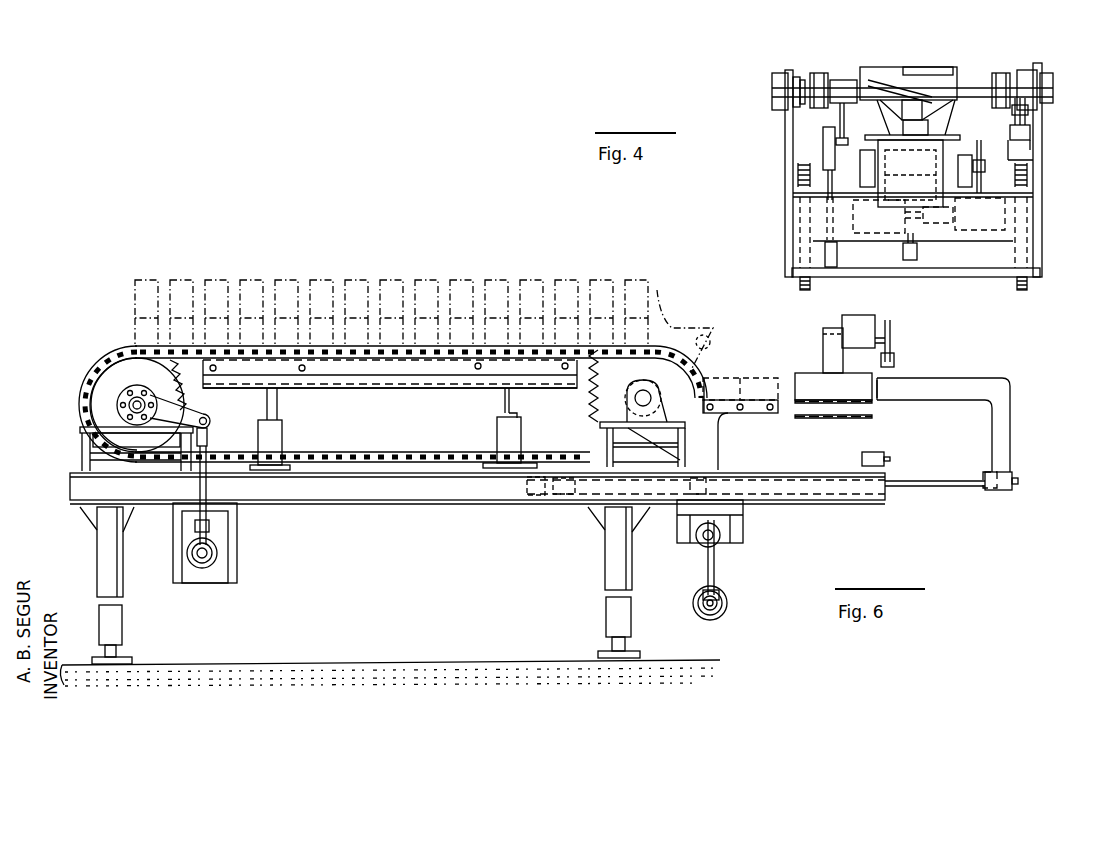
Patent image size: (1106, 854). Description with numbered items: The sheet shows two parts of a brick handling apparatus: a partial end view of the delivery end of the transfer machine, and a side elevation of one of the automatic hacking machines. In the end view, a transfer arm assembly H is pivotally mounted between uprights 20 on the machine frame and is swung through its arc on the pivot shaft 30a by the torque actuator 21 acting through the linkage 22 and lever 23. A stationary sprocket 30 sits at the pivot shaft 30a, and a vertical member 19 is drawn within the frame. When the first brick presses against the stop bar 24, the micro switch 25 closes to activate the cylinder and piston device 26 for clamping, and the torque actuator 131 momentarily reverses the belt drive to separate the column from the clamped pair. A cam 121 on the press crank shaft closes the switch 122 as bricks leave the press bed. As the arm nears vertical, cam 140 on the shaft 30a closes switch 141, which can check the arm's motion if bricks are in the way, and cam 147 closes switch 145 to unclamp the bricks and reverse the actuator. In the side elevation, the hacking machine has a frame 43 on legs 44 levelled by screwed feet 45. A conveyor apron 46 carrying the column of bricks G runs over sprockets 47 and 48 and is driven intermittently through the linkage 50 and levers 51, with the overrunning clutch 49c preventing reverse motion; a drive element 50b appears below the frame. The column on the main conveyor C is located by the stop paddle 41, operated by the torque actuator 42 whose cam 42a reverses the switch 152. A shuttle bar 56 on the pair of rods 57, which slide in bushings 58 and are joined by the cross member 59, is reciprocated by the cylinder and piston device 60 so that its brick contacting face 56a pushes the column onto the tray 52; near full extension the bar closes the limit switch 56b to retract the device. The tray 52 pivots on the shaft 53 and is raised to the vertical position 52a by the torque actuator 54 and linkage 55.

In FIG. 6, the column of bricks G is at (423, 284).
In FIG. 6, the conveyor apron 46 is at (333, 452).
In FIG. 6, the sprocket 47 is at (126, 372).
In FIG. 6, the levers 51 is at (180, 413).
In FIG. 6, the overrunning clutch 49c is at (108, 367).
In FIG. 6, the linkage 50 is at (209, 453).
In FIG. 6, the frame 43 is at (316, 498).
In FIG. 6, the legs 44 is at (118, 566).
In FIG. 6, the screwed feet 45 is at (123, 659).
In FIG. 6, the motor drive 50b is at (214, 572).
In FIG. 6, the cylinder and piston device 60 is at (779, 497).
In FIG. 6, the cross member 59 is at (534, 504).
In FIG. 6, the bushings 58 is at (565, 506).
In FIG. 6, the rods 57 is at (948, 480).
In FIG. 6, the limit switch 56b is at (882, 453).
In FIG. 6, the shuttle bar 56 is at (1022, 423).
In FIG. 6, the brick contacting face 56a is at (888, 392).
In FIG. 6, the stop paddle 41 is at (815, 382).
In FIG. 6, the main conveyor C is at (833, 402).
In FIG. 6, the torque actuator 42 is at (878, 332).
In FIG. 6, the cam 42a is at (892, 341).
In FIG. 6, the single pole double throw switch 152 is at (896, 362).
In FIG. 6, the tray 52 is at (752, 403).
In FIG. 6, the vertical position of tray 52a is at (666, 302).
In FIG. 6, the sprocket 48 is at (590, 408).
In FIG. 6, the shaft 53 is at (640, 396).
In FIG. 6, the torque actuator 54 is at (732, 544).
In FIG. 6, the linkage 55 is at (716, 564).
In FIG. 4, the uprights 20 is at (784, 152).
In FIG. 4, the stationary sprocket 30 is at (808, 72).
In FIG. 4, the transfer arm assembly H is at (820, 74).
In FIG. 4, the cylinder and piston device 26 is at (908, 70).
In FIG. 4, the pivot shaft 30a is at (980, 87).
In FIG. 4, the stop bar 24 is at (888, 128).
In FIG. 4, the micro switch 25 is at (913, 128).
In FIG. 4, the lever 23 is at (843, 124).
In FIG. 4, the linkage 22 is at (832, 185).
In FIG. 4, the rod 19 is at (980, 148).
In FIG. 4, the torque actuator 131 is at (888, 216).
In FIG. 4, the torque actuator 21 is at (984, 238).
In FIG. 4, the cam 121 is at (930, 240).
In FIG. 4, the switch 122 is at (912, 262).
In FIG. 4, the cam 147 is at (1053, 97).
In FIG. 4, the cam 140 is at (1031, 112).
In FIG. 4, the switch 145 is at (1032, 130).
In FIG. 4, the switch 141 is at (1027, 140).